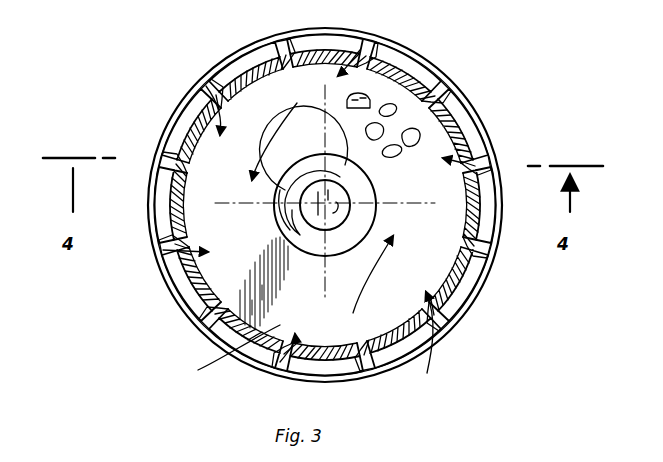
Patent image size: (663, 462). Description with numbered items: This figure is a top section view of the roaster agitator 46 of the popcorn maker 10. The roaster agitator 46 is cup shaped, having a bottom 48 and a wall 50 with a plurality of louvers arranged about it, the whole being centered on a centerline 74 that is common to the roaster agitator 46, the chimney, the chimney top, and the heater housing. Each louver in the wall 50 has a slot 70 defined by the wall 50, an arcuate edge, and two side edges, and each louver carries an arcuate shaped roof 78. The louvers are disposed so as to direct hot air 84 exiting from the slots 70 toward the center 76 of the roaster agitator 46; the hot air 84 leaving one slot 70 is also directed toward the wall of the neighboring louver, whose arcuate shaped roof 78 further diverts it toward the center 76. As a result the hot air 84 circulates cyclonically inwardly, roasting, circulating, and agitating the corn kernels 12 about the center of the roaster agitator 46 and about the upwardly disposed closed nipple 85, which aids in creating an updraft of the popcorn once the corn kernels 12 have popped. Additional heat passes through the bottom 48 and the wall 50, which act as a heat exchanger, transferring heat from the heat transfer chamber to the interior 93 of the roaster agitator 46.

The hose reel 10 is at (547, 50).
The corn kernels 12 is at (418, 128).
The roaster agitator 46 is at (498, 258).
The bottom 48 is at (391, 271).
The wall 50 is at (455, 330).
The slot 70 is at (290, 42).
The centerline 74 is at (378, 258).
The center 76 is at (345, 195).
The arcuate shaped roof 78 is at (252, 52).
The hot air 84 is at (405, 62).
The upwardly disposed closed nipple 85 is at (282, 228).
The interior 93 is at (230, 368).